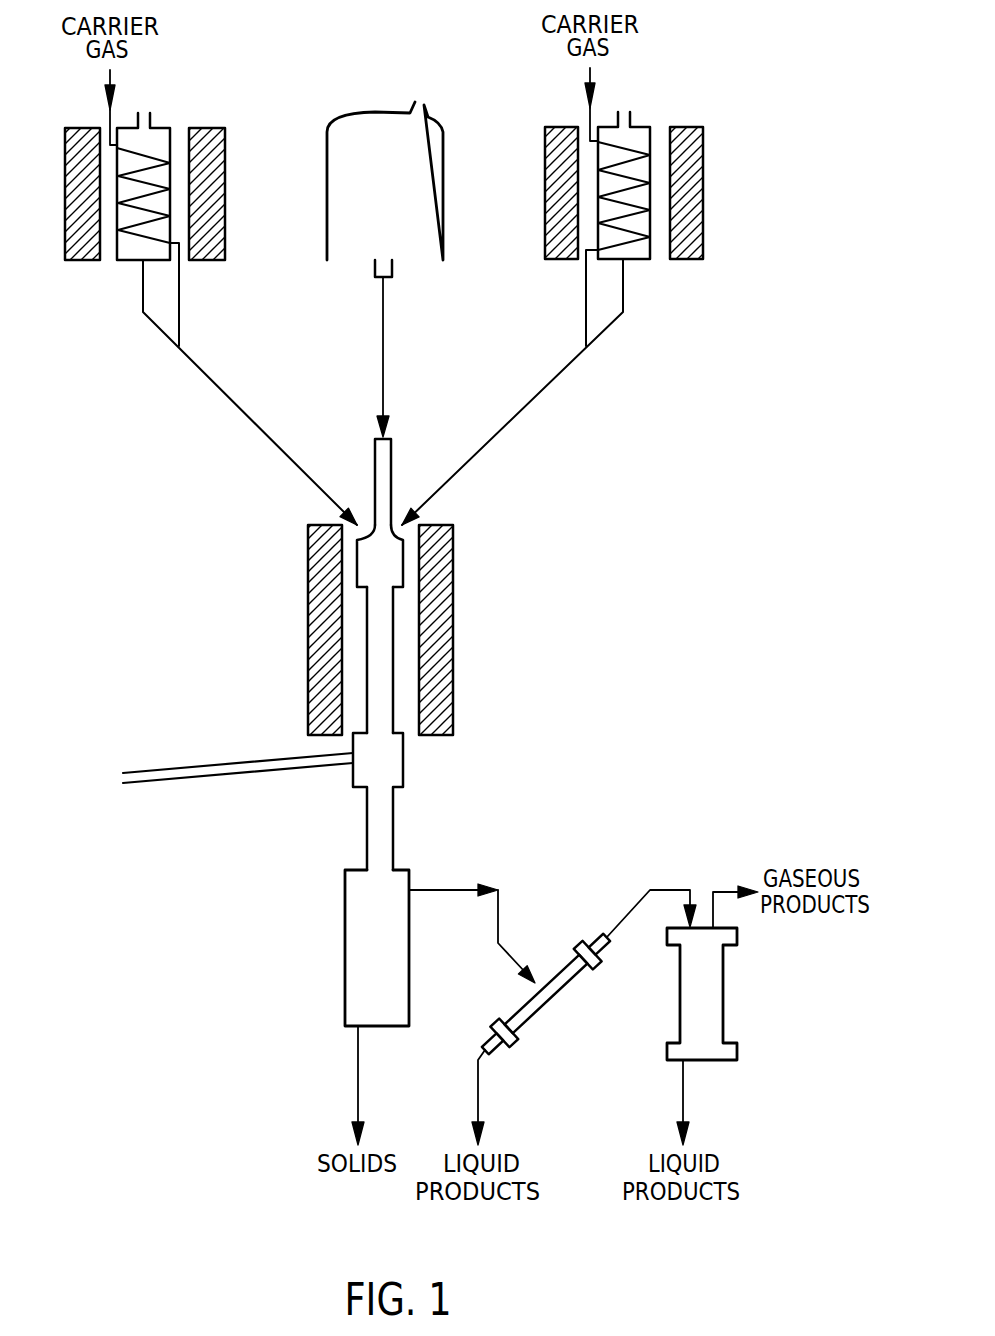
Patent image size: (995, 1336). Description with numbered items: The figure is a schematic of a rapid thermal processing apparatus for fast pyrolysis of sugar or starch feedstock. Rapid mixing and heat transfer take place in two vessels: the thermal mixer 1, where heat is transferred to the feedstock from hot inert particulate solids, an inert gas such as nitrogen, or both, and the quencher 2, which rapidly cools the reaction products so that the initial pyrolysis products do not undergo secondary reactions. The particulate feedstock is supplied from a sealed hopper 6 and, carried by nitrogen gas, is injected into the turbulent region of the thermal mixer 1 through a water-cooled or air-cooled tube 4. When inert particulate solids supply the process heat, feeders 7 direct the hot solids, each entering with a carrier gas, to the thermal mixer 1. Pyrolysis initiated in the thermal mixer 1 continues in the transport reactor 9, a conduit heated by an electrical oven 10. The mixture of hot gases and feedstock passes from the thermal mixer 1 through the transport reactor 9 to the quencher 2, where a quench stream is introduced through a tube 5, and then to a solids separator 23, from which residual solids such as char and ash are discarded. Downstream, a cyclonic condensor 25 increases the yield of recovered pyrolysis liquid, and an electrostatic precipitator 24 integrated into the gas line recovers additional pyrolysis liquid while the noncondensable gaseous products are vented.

The thermal mixer 1 is at (403, 553).
The quencher 2 is at (403, 764).
The water-cooled or air-cooled tube 4 is at (392, 448).
The feed tube 5 is at (188, 772).
The sealed hopper 6 is at (445, 160).
The feeders 7 is at (165, 128).
The transport reactor 9 is at (393, 655).
The electrical oven 10 is at (308, 606).
The solids separator 23 is at (345, 945).
The electrostatic precipitator 24 is at (723, 990).
The cyclonic condensor 25 is at (555, 1000).